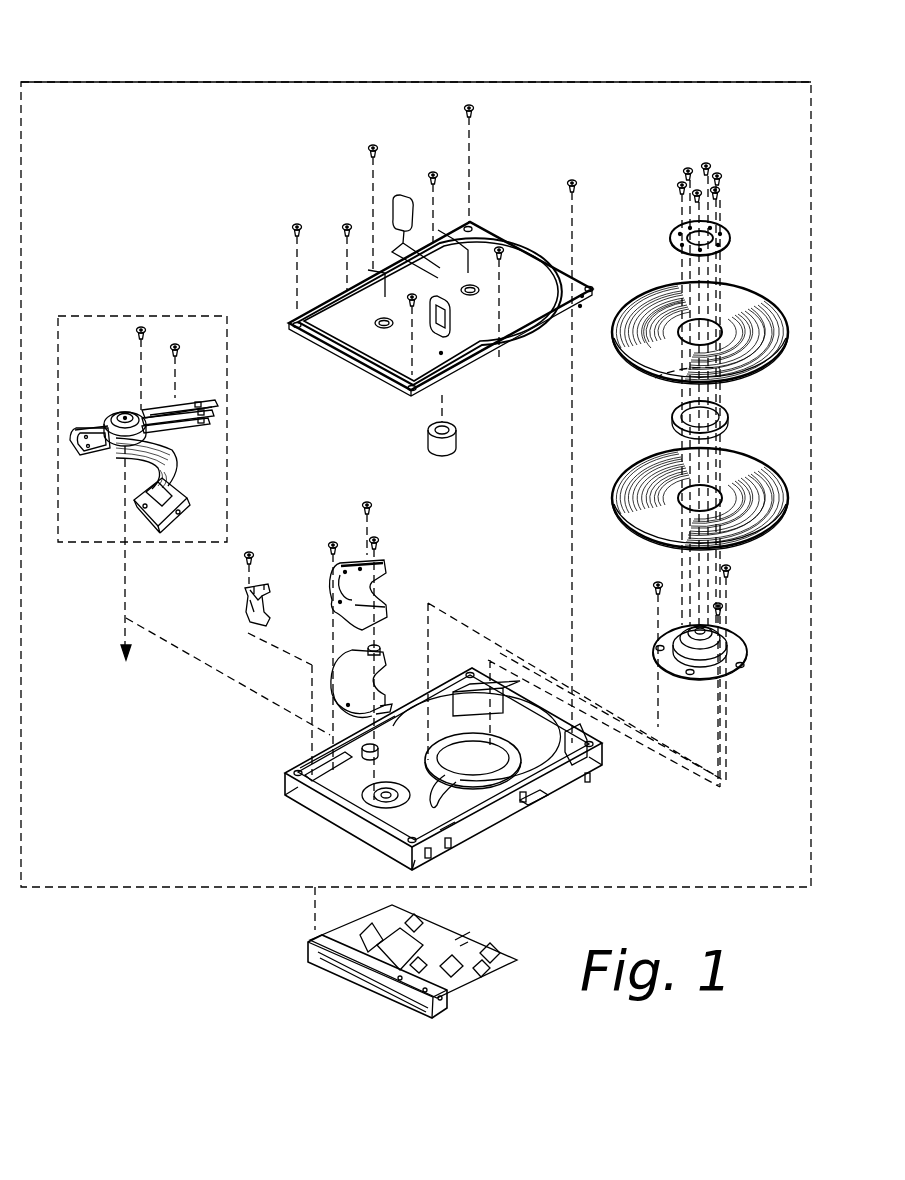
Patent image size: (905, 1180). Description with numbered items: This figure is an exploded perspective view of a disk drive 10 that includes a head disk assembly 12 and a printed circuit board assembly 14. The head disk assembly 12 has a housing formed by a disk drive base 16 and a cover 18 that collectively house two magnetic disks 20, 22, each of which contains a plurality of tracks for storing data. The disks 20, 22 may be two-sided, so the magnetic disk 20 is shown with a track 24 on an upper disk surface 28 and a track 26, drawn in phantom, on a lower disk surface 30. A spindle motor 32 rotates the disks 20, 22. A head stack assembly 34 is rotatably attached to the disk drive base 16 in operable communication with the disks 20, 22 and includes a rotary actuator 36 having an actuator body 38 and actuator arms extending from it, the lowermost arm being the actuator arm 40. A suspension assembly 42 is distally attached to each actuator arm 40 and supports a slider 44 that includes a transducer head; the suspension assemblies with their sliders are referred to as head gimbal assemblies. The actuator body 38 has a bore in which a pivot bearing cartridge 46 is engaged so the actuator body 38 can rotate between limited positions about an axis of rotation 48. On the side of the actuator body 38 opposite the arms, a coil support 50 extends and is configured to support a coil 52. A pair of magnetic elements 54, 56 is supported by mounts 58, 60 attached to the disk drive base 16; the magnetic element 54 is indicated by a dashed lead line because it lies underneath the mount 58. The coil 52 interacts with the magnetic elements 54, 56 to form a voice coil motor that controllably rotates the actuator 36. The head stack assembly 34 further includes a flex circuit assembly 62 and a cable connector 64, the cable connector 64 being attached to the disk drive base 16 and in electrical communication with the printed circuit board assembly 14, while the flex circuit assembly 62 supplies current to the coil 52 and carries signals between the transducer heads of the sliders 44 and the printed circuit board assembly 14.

The disk drive 10 is at (218, 61).
The head disk assembly 12 is at (163, 887).
The printed circuit board assembly 14 is at (504, 958).
The disk drive base 16 is at (480, 836).
The cover 18 is at (520, 318).
The magnetic disk 20 is at (628, 347).
The magnetic disk 22 is at (645, 462).
The track 24 is at (648, 318).
The track 26 is at (655, 380).
The upper disk surface 28 is at (762, 312).
The lower disk surface 30 is at (748, 376).
The spindle motor 32 is at (738, 640).
The head stack assembly 34 is at (166, 316).
The rotary actuator 36 is at (112, 416).
The actuator body 38 is at (134, 412).
The actuator arm 40 is at (178, 440).
The suspension assembly 42 is at (190, 432).
The slider 44 is at (215, 420).
The pivot bearing cartridge 46 is at (120, 412).
The axis of rotation 48 is at (128, 570).
The coil support 50 is at (88, 450).
The coil 52 is at (72, 432).
The magnetic element 54 is at (374, 590).
The magnetic element 56 is at (331, 677).
The mount 58 is at (335, 573).
The mount 60 is at (376, 656).
The flex circuit assembly 62 is at (180, 458).
The cable connector 64 is at (188, 504).